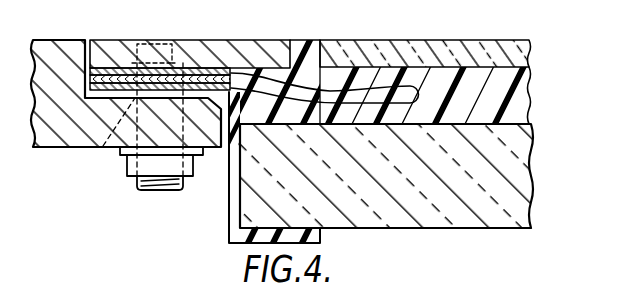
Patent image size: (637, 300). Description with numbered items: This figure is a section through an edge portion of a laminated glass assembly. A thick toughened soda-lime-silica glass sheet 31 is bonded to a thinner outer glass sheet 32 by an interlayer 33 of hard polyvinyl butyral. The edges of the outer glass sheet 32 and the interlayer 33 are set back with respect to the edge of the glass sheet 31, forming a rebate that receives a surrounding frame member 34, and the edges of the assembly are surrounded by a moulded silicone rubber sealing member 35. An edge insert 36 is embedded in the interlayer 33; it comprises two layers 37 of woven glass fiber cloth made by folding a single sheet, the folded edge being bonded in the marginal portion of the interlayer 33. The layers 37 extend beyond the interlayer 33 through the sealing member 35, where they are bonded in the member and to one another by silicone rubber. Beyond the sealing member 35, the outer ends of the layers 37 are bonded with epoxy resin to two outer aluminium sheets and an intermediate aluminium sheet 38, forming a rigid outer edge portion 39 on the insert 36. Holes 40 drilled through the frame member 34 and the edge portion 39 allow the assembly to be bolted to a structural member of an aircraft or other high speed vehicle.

The glass sheet 31 is at (527, 152).
The outer glass sheet 32 is at (527, 55).
The interlayer 33 is at (513, 85).
The frame member 34 is at (240, 50).
The sealing member 35 is at (231, 176).
The edge insert 36 is at (313, 63).
The layers of woven glass fiber cloth 37 is at (383, 86).
The aluminium sheets 38 is at (124, 87).
The rigid outer edge portion 39 is at (185, 57).
The holes 40 is at (110, 144).